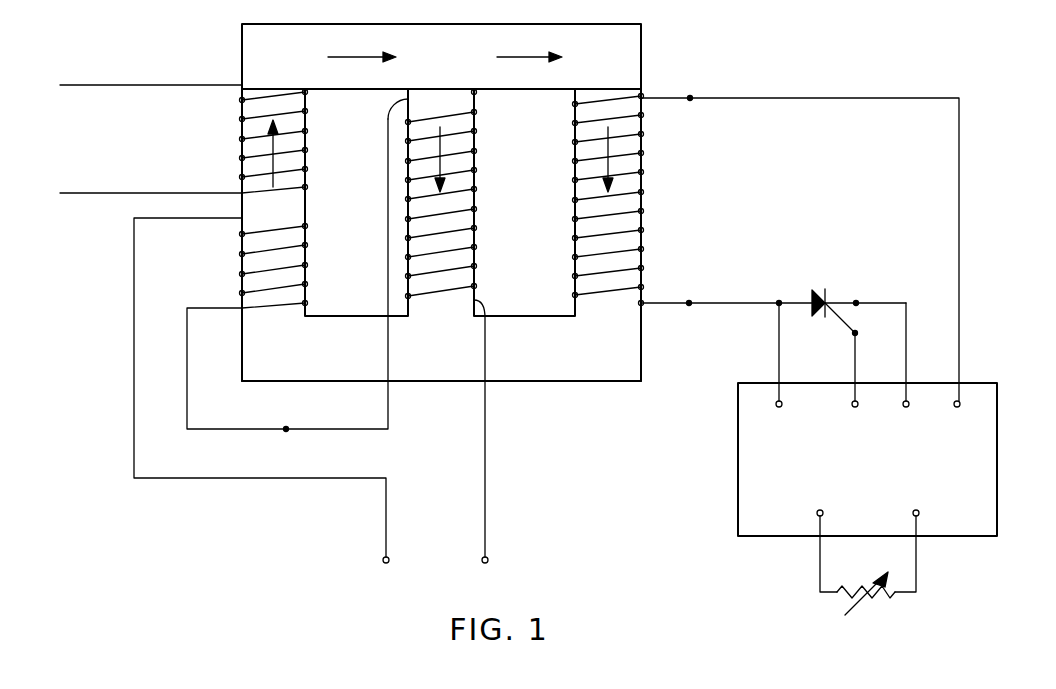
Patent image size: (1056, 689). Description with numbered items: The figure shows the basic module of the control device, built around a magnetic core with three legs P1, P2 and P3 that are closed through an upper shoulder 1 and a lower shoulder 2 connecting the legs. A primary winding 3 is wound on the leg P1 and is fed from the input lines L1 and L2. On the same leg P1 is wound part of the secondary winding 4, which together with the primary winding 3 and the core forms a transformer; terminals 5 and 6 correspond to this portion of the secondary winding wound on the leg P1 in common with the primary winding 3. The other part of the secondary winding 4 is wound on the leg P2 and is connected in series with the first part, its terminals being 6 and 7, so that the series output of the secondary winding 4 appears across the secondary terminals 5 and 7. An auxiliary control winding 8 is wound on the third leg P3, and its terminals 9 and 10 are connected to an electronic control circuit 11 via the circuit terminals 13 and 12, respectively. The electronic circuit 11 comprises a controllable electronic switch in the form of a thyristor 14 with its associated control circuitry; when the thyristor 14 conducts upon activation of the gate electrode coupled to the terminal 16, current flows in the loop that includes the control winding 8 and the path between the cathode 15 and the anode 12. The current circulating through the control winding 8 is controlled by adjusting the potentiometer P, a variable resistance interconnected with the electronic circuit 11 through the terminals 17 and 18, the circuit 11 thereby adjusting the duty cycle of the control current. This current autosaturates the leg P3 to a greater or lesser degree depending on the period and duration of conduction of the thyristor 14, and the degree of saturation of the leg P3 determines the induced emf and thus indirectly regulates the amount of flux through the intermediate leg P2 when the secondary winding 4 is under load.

The upper shoulder 1 is at (441, 202).
The lower shoulder 2 is at (441, 359).
The primary winding 3 is at (282, 142).
The secondary winding 4 is at (366, 199).
The secondary terminal 5 is at (263, 404).
The secondary winding terminal 6 is at (297, 265).
The secondary terminal 7 is at (481, 445).
The control winding 8 is at (615, 200).
The control winding terminal 9 is at (800, 234).
The control winding terminal 10 is at (726, 289).
The electronic control circuit 11 is at (882, 459).
The circuit terminal 12 is at (779, 356).
The circuit terminal 13 is at (957, 420).
The thyristor 14 is at (818, 287).
The cathode 15 is at (872, 357).
The gate terminal 16 is at (844, 371).
The potentiometer terminal 17 is at (912, 535).
The potentiometer terminal 18 is at (821, 535).
The potentiometer P is at (866, 600).
The first leg P1 is at (273, 89).
The second leg P2 is at (441, 89).
The third leg P3 is at (608, 89).
The input line L1 is at (136, 85).
The input line L2 is at (136, 193).